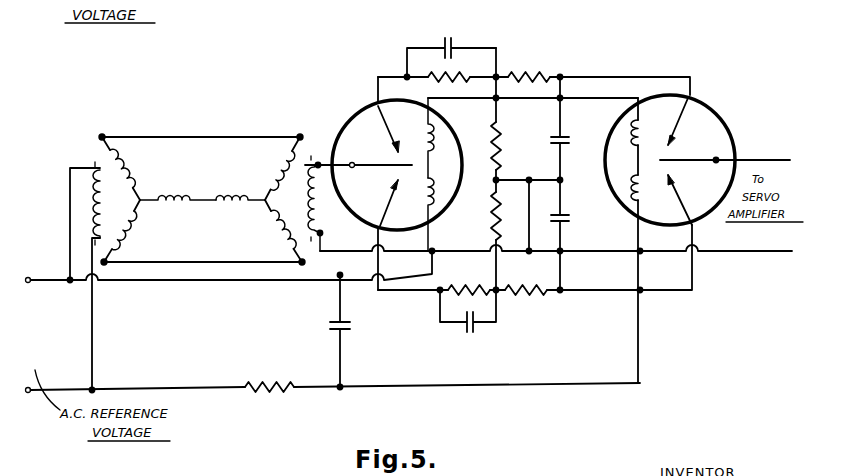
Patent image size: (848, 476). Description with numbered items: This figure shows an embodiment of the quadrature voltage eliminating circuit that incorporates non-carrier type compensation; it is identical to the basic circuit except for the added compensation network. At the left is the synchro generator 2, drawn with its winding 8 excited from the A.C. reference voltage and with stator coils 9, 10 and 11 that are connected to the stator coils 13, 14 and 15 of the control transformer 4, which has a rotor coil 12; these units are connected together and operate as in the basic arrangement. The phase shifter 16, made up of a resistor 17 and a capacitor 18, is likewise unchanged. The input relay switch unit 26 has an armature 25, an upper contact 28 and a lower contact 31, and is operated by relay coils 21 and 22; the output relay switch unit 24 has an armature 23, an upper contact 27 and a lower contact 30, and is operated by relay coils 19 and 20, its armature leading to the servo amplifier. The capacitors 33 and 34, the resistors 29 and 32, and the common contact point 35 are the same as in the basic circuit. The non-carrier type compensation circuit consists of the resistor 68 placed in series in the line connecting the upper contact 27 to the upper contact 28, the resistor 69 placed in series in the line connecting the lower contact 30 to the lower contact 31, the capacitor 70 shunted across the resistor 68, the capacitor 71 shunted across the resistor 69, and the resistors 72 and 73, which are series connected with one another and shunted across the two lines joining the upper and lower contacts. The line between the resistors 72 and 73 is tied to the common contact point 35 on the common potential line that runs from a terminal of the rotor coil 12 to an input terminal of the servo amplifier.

The synchro generator 2 is at (124, 207).
The control transformer 4 is at (294, 205).
The primary winding 8 is at (96, 210).
The stator coil 9 is at (132, 232).
The stator coil 10 is at (170, 196).
The stator coil 11 is at (130, 174).
The rotor coil 12 is at (318, 222).
The stator coil 13 is at (276, 162).
The stator coil 14 is at (220, 206).
The stator coil 15 is at (276, 232).
The phase shifter 16 is at (296, 338).
The resistor 17 is at (270, 392).
The capacitor 18 is at (348, 330).
The relay coil 19 is at (640, 195).
The relay coil 20 is at (640, 132).
The relay coil 21 is at (424, 126).
The relay coil 22 is at (426, 198).
The armature 23 is at (684, 162).
The output relay switch unit 24 is at (716, 122).
The armature 25 is at (372, 166).
The input relay switch unit 26 is at (356, 120).
The upper contact 27 is at (670, 146).
The upper contact 28 is at (396, 146).
The resistor 29 is at (540, 68).
The lower contact 30 is at (670, 178).
The lower contact 31 is at (396, 188).
The resistor 32 is at (516, 296).
The capacitor 33 is at (568, 140).
The capacitor 34 is at (570, 218).
The common contact point 35 is at (524, 282).
The resistor 68 is at (452, 74).
The resistor 69 is at (468, 282).
The capacitor 70 is at (452, 36).
The capacitor 71 is at (466, 332).
The resistor 72 is at (502, 146).
The resistor 73 is at (492, 216).